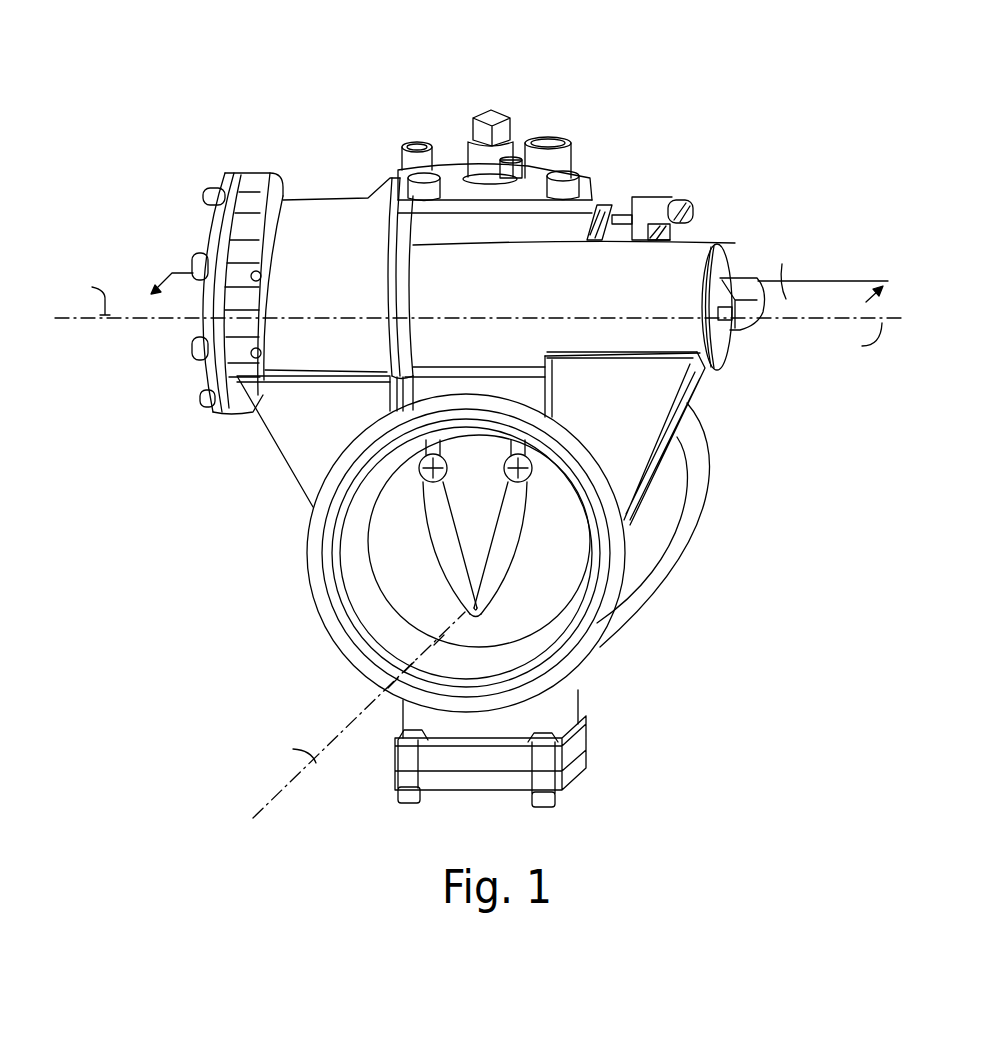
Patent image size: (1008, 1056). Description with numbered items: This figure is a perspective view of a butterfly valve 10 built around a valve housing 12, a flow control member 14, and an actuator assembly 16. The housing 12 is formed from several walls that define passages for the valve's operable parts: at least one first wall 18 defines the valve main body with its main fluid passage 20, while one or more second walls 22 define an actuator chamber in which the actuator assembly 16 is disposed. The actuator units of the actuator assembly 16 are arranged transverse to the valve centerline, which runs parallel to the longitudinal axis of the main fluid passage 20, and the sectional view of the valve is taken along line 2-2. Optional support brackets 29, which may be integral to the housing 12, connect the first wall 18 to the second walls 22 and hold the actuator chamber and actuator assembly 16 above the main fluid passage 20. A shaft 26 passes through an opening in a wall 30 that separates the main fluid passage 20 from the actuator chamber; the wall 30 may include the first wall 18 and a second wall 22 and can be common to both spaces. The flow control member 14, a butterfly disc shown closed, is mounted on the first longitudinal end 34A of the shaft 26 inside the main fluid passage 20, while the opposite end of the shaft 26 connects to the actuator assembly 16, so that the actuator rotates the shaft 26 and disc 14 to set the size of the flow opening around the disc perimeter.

The valve 10 is at (735, 120).
The line 2- 2 is at (476, 526).
The valve housing 12 is at (331, 146).
The flow control member 14 is at (460, 579).
The actuator assembly 16 is at (660, 276).
The first wall 18 is at (400, 636).
The main fluid passage 20 is at (410, 566).
The second walls 22 is at (500, 244).
The shaft 26 is at (423, 500).
The support brackets 29 is at (471, 438).
The wall 30 is at (471, 386).
The first longitudinal end 34A is at (477, 550).